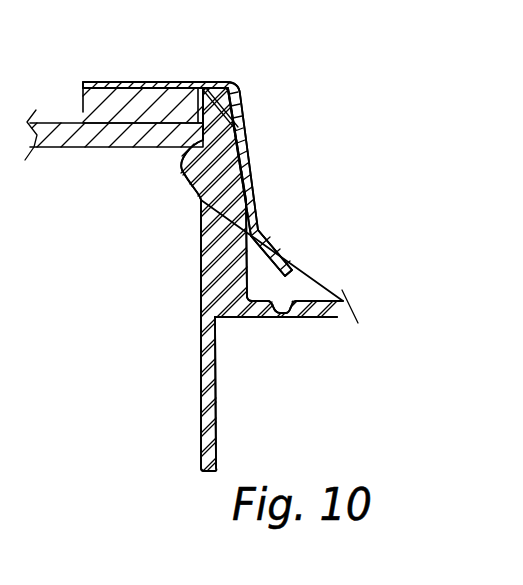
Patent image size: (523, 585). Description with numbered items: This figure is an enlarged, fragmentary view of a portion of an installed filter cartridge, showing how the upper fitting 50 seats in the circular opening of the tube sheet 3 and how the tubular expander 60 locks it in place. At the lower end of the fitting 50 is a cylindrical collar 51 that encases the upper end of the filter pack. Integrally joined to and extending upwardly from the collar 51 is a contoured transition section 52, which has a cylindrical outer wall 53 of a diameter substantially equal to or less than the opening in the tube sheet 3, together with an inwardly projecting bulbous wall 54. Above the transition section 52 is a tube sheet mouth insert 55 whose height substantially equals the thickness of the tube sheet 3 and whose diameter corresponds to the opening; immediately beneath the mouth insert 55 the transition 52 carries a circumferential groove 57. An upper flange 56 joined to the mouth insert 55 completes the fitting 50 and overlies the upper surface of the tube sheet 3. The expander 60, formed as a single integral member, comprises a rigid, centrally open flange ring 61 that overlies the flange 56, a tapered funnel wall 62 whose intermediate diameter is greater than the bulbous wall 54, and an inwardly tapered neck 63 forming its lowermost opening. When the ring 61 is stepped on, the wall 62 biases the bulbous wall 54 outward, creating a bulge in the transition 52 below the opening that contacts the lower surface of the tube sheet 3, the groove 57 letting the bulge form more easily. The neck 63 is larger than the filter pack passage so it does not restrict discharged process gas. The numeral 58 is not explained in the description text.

The tube sheet 3 is at (75, 148).
The fitting 50 is at (117, 300).
The cylindrical collar 51 is at (212, 402).
The transition section 52 is at (228, 249).
The cylindrical outer wall 53 is at (195, 241).
The bulbous wall 54 is at (250, 192).
The tube sheet mouth insert 55 is at (173, 140).
The upper flange 56 is at (84, 111).
The circumferential groove 57 is at (212, 82).
The upper body portion 58 is at (183, 157).
The tubular expander 60 is at (302, 82).
The flange ring 61 is at (146, 82).
The tapered funnel wall 62 is at (252, 140).
The inwardly tapered neck 63 is at (283, 257).